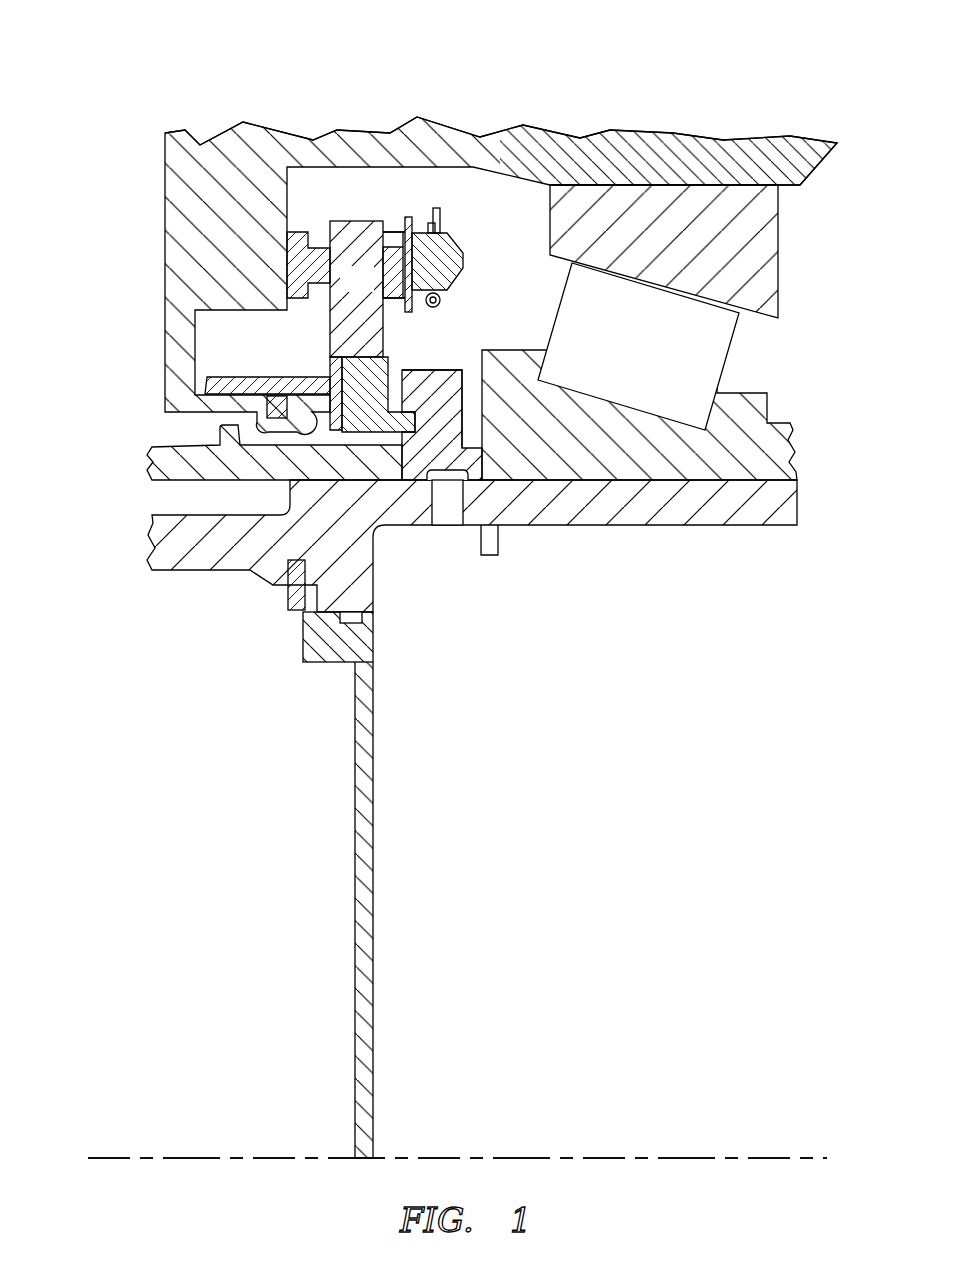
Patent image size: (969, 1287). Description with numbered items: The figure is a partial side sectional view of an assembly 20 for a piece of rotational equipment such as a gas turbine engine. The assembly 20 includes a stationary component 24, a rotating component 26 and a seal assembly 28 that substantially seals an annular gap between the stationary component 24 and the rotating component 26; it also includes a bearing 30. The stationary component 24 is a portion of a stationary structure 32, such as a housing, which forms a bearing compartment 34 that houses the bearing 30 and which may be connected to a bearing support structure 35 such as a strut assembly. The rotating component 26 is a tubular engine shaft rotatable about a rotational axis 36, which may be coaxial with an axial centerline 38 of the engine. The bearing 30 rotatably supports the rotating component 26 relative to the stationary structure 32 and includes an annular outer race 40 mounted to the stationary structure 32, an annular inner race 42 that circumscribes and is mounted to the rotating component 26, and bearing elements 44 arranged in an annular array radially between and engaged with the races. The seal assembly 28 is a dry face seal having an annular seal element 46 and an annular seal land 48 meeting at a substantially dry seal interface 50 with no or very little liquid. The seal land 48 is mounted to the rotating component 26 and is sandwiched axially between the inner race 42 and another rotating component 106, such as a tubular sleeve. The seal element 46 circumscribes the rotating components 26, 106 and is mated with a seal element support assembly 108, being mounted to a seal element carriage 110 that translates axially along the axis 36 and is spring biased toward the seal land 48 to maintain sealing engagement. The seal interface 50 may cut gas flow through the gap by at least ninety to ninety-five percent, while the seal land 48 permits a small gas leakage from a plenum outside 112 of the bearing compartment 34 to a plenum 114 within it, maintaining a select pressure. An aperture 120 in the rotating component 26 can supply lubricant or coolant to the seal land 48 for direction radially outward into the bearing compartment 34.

The assembly 20 is at (122, 90).
The stationary component 24 is at (165, 268).
The rotating component 26 is at (150, 552).
The seal assembly 28 is at (442, 345).
The bearing 30 is at (792, 282).
The stationary structure 32 is at (223, 128).
The bearing compartment 34 is at (462, 210).
The bearing support structure 35 is at (722, 142).
The rotational axis 36 is at (815, 1158).
The axial centerline 38 is at (815, 1158).
The outer race 40 is at (778, 218).
The inner race 42 is at (770, 400).
The bearing elements 44 is at (735, 357).
The seal element 46 is at (338, 365).
The seal land 48 is at (467, 420).
The seal interface 50 is at (400, 376).
The rotating component 106 is at (147, 460).
The seal element support assembly 108 is at (387, 207).
The seal element carriage 110 is at (327, 318).
The plenum outside 112 is at (130, 431).
The plenum 114 is at (535, 333).
The aperture 120 is at (445, 515).